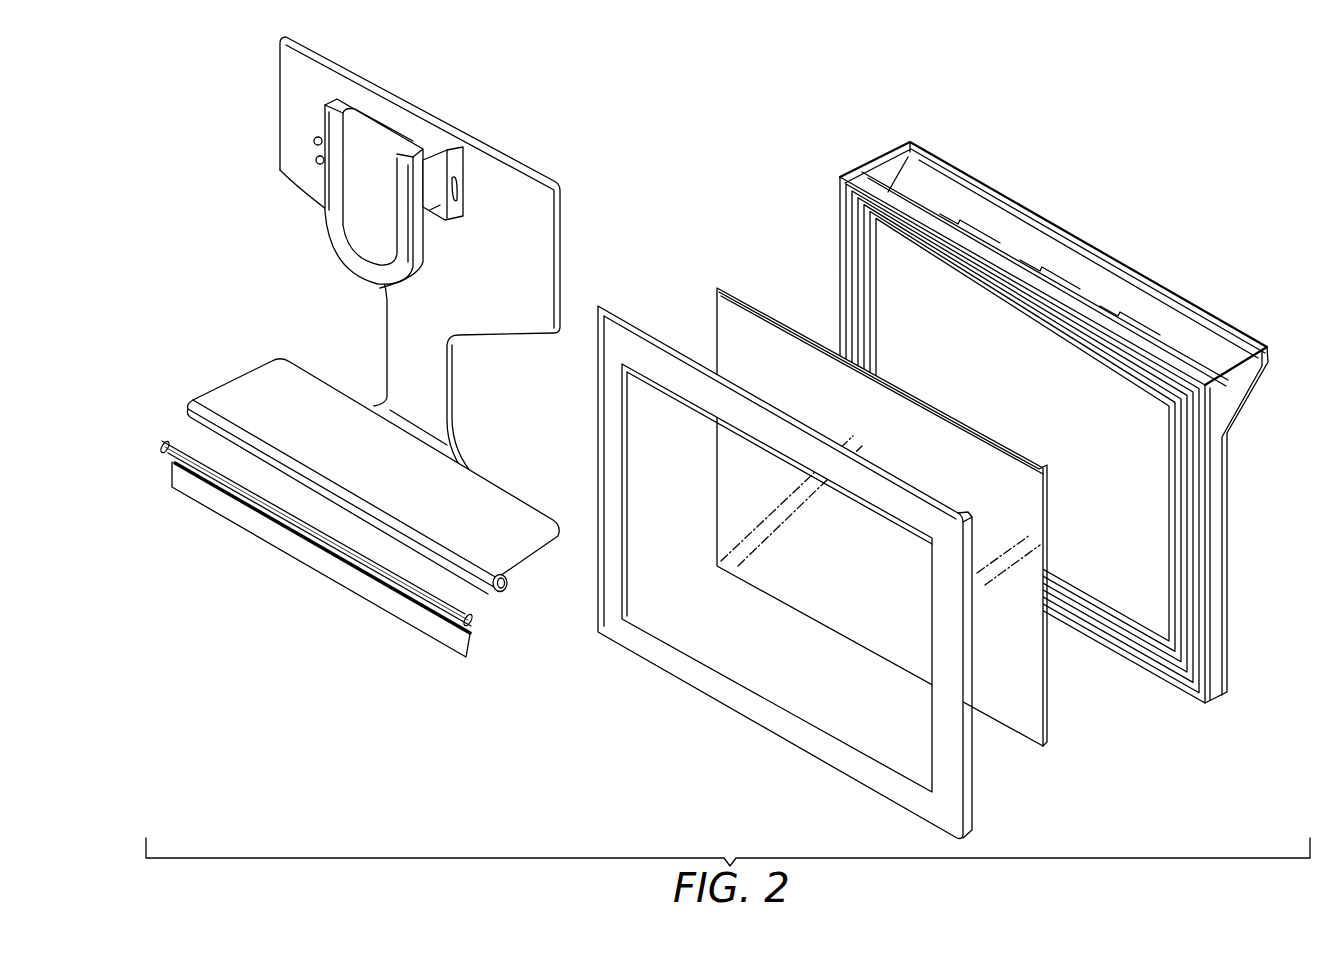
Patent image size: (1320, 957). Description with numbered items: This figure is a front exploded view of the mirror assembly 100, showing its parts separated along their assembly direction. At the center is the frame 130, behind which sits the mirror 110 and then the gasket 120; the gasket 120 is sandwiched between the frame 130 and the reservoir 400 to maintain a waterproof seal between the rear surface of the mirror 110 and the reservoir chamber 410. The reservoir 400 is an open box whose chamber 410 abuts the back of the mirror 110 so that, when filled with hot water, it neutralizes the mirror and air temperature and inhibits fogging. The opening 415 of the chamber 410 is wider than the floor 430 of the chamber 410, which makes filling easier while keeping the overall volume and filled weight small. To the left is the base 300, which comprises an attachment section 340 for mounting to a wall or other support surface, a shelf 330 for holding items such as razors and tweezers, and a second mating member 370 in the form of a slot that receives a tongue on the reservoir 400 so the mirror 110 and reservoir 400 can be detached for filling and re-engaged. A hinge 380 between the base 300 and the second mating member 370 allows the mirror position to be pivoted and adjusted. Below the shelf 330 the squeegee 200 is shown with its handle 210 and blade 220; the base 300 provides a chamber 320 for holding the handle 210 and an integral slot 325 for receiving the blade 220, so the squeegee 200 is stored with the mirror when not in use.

The mirror assembly 100 is at (1188, 163).
The mirror 110 is at (723, 294).
The gasket 120 is at (856, 283).
The frame 130 is at (655, 668).
The squeegee 200 is at (476, 638).
The handle 210 is at (170, 447).
The blade 220 is at (320, 568).
The base 300 is at (253, 138).
The chamber 320 is at (506, 582).
The slot 325 is at (499, 594).
The shelf 330 is at (272, 372).
The attachment section 340 is at (290, 78).
The second mating member 370 is at (330, 200).
The hinge 380 is at (440, 216).
The reservoir 400 is at (833, 213).
The chamber 410 is at (970, 222).
The opening 415 is at (1082, 275).
The floor 430 is at (1215, 695).